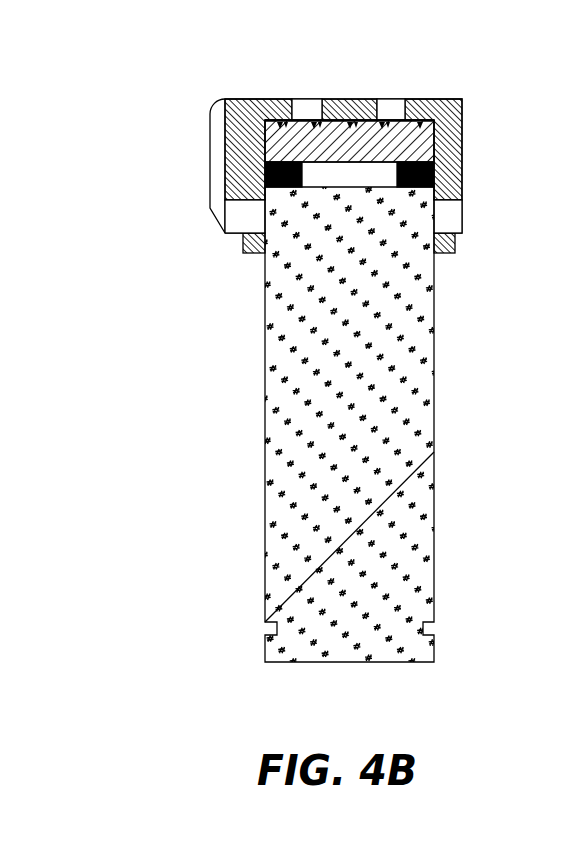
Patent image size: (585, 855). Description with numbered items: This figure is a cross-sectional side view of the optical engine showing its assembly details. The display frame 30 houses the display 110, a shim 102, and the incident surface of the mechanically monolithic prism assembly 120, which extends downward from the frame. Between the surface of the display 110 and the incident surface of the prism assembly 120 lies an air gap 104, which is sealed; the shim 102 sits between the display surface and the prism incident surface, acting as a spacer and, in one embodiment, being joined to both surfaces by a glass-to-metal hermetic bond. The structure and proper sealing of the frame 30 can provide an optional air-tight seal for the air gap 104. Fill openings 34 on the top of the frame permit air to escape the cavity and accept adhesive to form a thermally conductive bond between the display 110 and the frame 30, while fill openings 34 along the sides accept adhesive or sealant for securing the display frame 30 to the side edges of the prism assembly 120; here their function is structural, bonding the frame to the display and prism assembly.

The display frame 30 is at (253, 99).
The fill openings 34 is at (387, 99).
The shim 102 is at (267, 164).
The air gap 104 is at (380, 170).
The display 110 is at (352, 119).
The prism assembly 120 is at (425, 403).